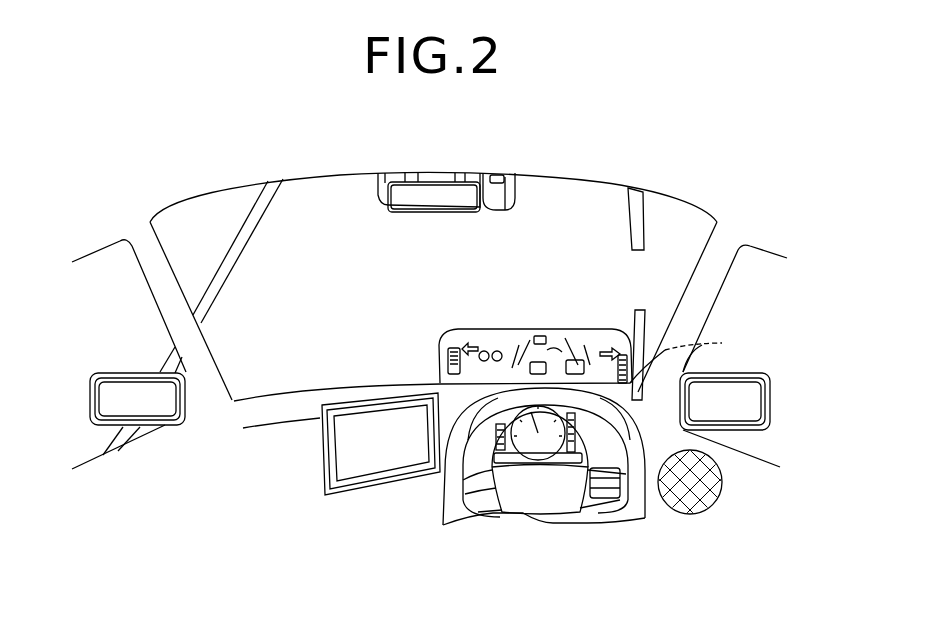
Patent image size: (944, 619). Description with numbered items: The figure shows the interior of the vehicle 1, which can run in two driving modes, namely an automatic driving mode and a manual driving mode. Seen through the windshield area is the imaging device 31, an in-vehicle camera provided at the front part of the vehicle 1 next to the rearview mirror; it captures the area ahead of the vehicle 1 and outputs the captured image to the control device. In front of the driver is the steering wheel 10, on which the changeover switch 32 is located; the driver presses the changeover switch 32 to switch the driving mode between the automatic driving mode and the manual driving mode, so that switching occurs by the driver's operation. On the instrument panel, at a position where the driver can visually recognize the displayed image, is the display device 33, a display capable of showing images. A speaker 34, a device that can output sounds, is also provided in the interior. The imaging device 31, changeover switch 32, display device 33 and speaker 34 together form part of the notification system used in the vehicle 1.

The vehicle 1 is at (151, 159).
The steering wheel 10 is at (722, 343).
The imaging device 31 is at (505, 172).
The changeover switch 32 is at (620, 480).
The display device 33 is at (325, 452).
The speaker 34 is at (712, 480).